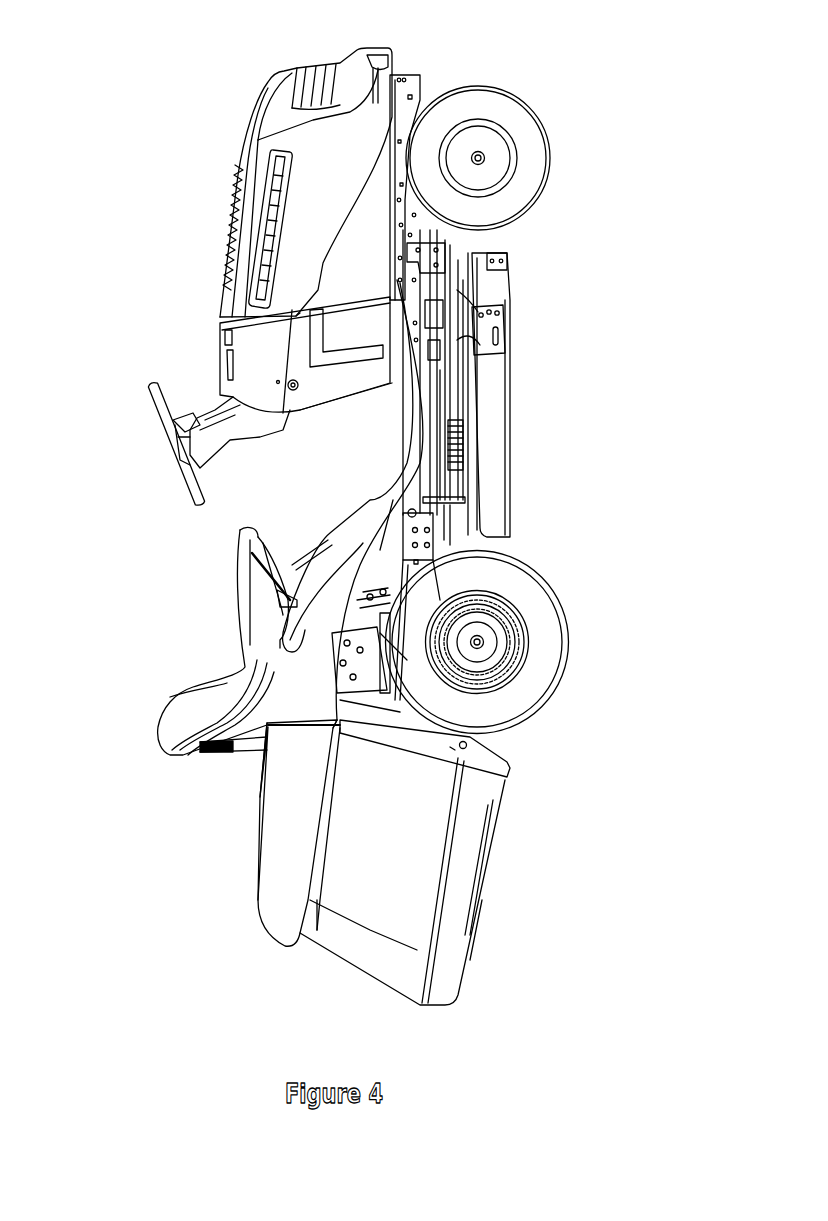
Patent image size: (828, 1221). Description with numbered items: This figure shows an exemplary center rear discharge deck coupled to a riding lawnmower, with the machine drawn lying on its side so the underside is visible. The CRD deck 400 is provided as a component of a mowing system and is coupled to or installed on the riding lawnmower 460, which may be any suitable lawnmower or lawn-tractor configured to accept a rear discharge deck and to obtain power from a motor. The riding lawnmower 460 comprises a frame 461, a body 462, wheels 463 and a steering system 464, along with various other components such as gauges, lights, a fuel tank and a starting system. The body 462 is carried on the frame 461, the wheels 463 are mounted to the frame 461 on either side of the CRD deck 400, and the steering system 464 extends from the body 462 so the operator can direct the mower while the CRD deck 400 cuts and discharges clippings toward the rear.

The CRD deck 400 is at (493, 253).
The riding lawnmower 460 is at (277, 73).
The frame 461 is at (423, 73).
The body 462 is at (220, 303).
The wheels 463 is at (543, 127).
The steering system 464 is at (170, 433).